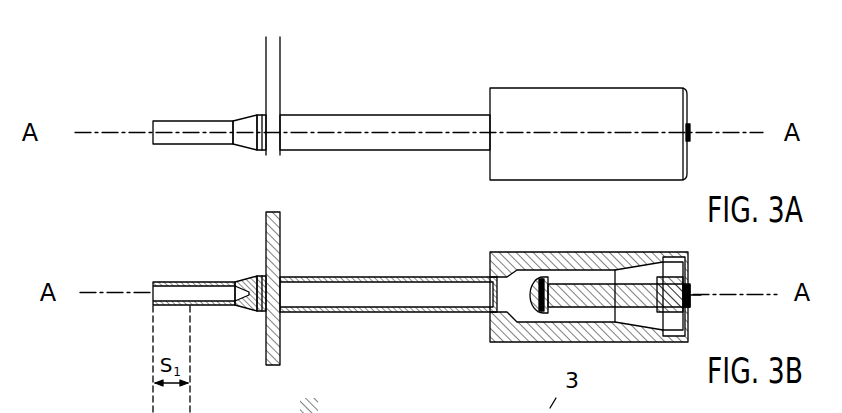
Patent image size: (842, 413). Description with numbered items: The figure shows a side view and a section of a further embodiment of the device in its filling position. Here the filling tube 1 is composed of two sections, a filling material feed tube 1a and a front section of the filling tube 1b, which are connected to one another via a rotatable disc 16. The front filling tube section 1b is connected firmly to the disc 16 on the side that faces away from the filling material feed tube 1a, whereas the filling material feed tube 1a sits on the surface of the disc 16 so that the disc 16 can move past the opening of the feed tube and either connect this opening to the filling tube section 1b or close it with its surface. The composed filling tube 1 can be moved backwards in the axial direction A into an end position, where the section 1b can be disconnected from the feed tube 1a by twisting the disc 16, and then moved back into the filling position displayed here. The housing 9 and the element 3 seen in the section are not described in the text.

In FIG. 3A, the filling tube 1 is at (326, 57).
In FIG. 3A, the filling material feed tube 1a is at (384, 115).
In FIG. 3B, the filling material feed tube 1a is at (384, 277).
In FIG. 3A, the front section of the filling tube 1b is at (185, 118).
In FIG. 3B, the front section of the filling tube 1b is at (187, 282).
In FIG. 3B, the rod / core element 3 is at (568, 285).
In FIG. 3A, the housing 9 is at (583, 88).
In FIG. 3B, the housing 9 is at (612, 252).
In FIG. 3A, the rotatable disc 16 is at (275, 156).
In FIG. 3B, the rotatable disc 16 is at (273, 288).